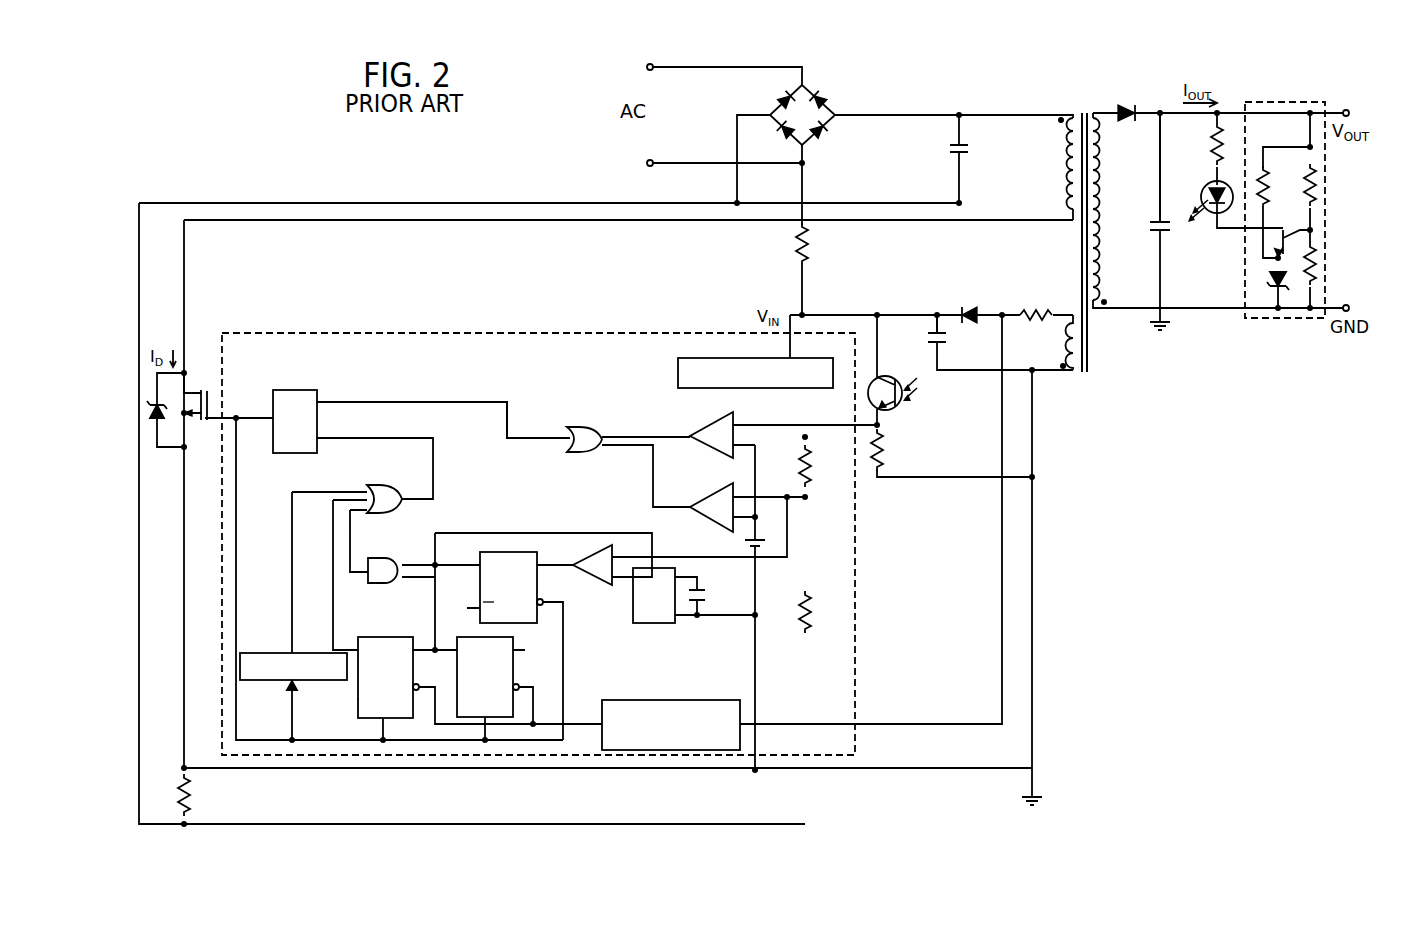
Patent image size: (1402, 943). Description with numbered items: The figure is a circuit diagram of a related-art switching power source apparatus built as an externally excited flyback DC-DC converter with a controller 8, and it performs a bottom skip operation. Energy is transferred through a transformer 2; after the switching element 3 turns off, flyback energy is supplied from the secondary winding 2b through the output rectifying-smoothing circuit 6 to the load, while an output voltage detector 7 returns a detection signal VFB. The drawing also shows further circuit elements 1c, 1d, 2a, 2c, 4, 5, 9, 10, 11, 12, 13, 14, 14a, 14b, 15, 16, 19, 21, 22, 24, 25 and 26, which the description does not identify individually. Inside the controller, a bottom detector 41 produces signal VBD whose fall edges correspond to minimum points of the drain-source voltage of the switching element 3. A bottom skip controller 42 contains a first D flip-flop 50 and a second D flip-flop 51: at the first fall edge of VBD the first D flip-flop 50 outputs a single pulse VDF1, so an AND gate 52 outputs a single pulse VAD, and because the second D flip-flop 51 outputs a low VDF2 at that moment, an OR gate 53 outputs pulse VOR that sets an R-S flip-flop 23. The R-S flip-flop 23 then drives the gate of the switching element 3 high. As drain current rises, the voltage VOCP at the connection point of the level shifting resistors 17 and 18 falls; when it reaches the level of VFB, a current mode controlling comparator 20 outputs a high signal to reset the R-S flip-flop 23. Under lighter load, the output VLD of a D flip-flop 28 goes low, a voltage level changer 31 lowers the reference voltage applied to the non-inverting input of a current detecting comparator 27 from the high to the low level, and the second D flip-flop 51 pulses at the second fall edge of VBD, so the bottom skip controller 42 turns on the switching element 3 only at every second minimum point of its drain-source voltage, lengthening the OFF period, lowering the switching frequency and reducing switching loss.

The rectifier (diode bridge) 1c is at (823, 95).
The input capacitor 1d is at (949, 150).
The transformer 2 is at (1085, 100).
The primary winding 2a is at (1061, 163).
The secondary winding 2b is at (1105, 268).
The auxiliary winding 2c is at (1060, 320).
The switching element 3 is at (201, 386).
The output rectifier diode 4 is at (1126, 118).
The output smoothing capacitor 5 is at (1147, 226).
The output rectifying-smoothing circuit 6 is at (1145, 100).
The output voltage detector 7 is at (1291, 100).
The controller 8 is at (545, 333).
The current detection resistor 9 is at (177, 790).
The start-up resistor 10 is at (810, 248).
The diode 11 is at (970, 306).
The capacitor 12 is at (948, 340).
The capacitor 13 is at (934, 310).
The photocoupler 14 is at (922, 395).
The light emitting diode 14a is at (1209, 221).
The phototransistor 14b is at (891, 377).
The feedback resistor 15 is at (885, 453).
The reference voltage source 16 is at (762, 538).
The level shifting resistor 17 is at (812, 460).
The level shifting resistor 18 is at (812, 612).
The overcurrent comparator 19 is at (710, 497).
The current mode controlling comparator 20 is at (710, 426).
The OR circuit 21 is at (585, 426).
The oscillator 22 is at (277, 682).
The R-S flip-flop 23 is at (294, 390).
The regulator and start/stop circuit 24 is at (678, 373).
The reset signal line 25 is at (465, 392).
The capacitor 26 is at (706, 588).
The current detecting comparator 27 is at (590, 578).
The D flip-flop 28 is at (504, 565).
The voltage level changer 31 is at (654, 595).
The bottom detector 41 is at (655, 699).
The bottom skip controller 42 is at (354, 698).
The first D flip-flop 50 is at (507, 677).
The second D flip-flop 51 is at (353, 642).
The AND gate 52 is at (392, 558).
The OR gate 53 is at (381, 485).